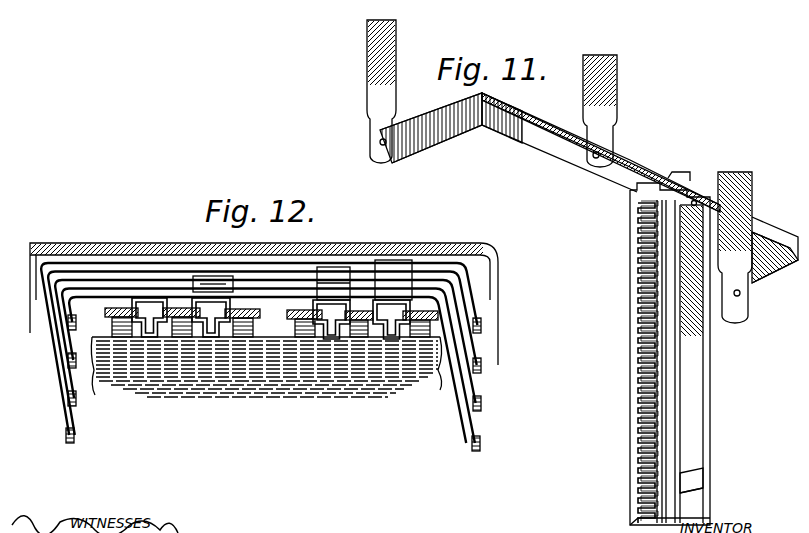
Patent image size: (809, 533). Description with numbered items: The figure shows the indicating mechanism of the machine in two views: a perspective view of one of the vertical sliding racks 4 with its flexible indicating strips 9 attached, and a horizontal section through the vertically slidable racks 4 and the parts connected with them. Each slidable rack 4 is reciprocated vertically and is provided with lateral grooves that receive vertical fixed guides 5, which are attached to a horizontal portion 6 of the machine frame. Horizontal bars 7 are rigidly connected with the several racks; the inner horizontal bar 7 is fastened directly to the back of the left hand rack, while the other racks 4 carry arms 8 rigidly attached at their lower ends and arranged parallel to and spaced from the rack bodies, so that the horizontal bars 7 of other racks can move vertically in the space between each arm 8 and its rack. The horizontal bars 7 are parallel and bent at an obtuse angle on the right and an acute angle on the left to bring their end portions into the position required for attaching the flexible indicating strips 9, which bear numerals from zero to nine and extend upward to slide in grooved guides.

In FIG. 11, the slidable rack 4 is at (640, 328).
In FIG. 12, the slidable rack 4 is at (157, 334).
In FIG. 12, the vertical fixed guide 5 is at (105, 311).
In FIG. 12, the horizontal portion of the frame 6 is at (266, 367).
In FIG. 11, the horizontal bar 7 is at (432, 133).
In FIG. 12, the horizontal bar 7 is at (97, 283).
In FIG. 11, the arm 8 is at (716, 366).
In FIG. 12, the arm 8 is at (213, 278).
In FIG. 11, the flexible indicating strip 9 is at (367, 53).
In FIG. 12, the flexible indicating strip 9 is at (75, 432).